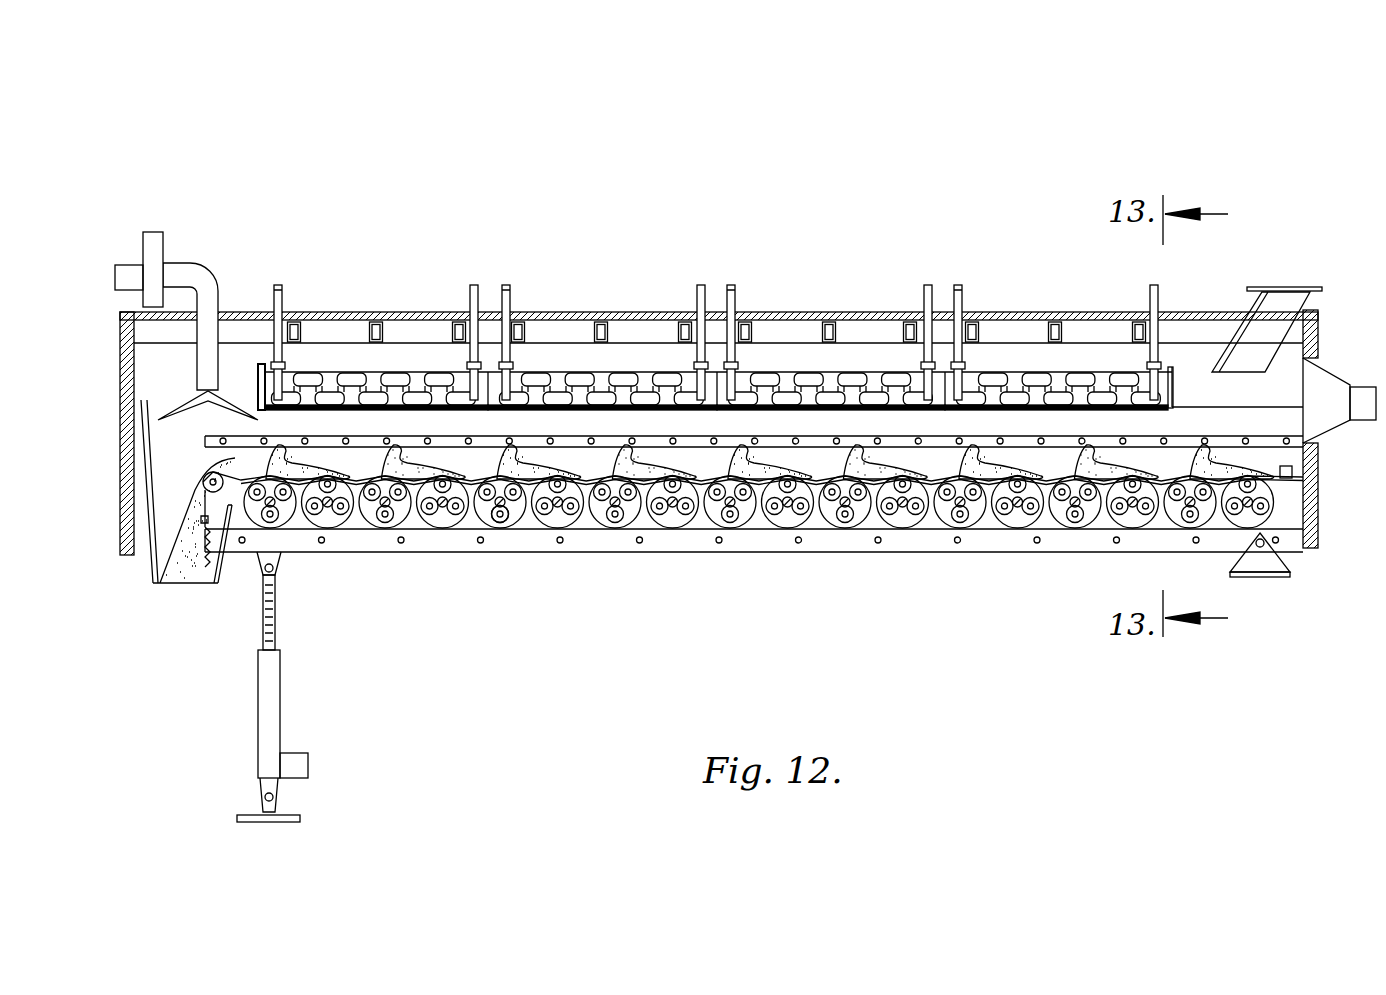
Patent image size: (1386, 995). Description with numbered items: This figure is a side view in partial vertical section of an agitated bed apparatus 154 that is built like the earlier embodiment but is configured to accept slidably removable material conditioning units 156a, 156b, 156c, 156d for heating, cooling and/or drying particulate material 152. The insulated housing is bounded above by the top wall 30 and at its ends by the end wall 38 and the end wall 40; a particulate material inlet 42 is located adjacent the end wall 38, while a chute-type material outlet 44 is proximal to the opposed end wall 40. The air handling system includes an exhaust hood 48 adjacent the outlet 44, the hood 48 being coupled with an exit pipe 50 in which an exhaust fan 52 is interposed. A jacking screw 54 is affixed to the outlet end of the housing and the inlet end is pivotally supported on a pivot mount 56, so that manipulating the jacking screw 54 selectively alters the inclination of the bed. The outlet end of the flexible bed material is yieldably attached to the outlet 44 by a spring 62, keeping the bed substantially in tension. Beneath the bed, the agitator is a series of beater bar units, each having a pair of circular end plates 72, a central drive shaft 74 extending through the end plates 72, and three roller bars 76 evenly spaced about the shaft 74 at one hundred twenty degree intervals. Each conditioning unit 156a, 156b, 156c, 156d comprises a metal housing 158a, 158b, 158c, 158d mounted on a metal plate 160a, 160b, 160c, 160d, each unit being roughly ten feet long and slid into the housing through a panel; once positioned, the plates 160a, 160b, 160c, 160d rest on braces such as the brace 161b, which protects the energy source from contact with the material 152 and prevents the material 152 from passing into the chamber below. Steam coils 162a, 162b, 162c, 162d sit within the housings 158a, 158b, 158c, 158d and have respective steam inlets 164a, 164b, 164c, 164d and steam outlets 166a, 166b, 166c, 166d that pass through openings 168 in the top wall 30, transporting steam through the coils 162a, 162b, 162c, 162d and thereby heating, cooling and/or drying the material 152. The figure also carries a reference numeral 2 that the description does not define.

The outlet 2 is at (1353, 366).
The top wall 30 is at (527, 310).
The end wall 38 is at (1313, 325).
The end wall 40 is at (125, 387).
The particulate material inlet 42 is at (1300, 292).
The material outlet 44 is at (152, 568).
The exhaust hood 48 is at (188, 393).
The exit pipe 50 is at (182, 269).
The exhaust fan 52 is at (152, 232).
The jacking screw 54 is at (272, 697).
The pivot mount 56 is at (1277, 565).
The spring 62 is at (212, 545).
The circular end plates 72 is at (372, 512).
The central drive shaft 74 is at (759, 539).
The roller bars 76 is at (503, 515).
The particulate material 152 is at (422, 465).
The agitated bed apparatus 154 is at (723, 276).
The material conditioning unit 156a is at (437, 360).
The material conditioning unit 156b is at (668, 360).
The material conditioning unit 156c is at (897, 358).
The material conditioning unit 156d is at (1118, 352).
The metal housing 158a is at (298, 377).
The metal housing 158b is at (543, 380).
The metal housing 158c is at (772, 368).
The metal housing 158d is at (997, 372).
The metal plate 160a is at (373, 348).
The metal plate 160b is at (602, 347).
The metal plate 160c is at (831, 347).
The metal plate 160d is at (1059, 347).
The brace 161b is at (1220, 407).
The steam coil 162a is at (374, 331).
The steam coil 162b is at (602, 330).
The steam coil 162c is at (831, 331).
The steam coil 162d is at (1059, 331).
The steam inlet 164a is at (475, 283).
The steam inlet 164b is at (700, 283).
The steam inlet 164c is at (927, 283).
The steam inlet 164d is at (1158, 293).
The steam outlet 166a is at (278, 285).
The steam outlet 166b is at (506, 283).
The steam outlet 166c is at (731, 282).
The steam outlet 166d is at (958, 283).
The openings 168 is at (273, 305).